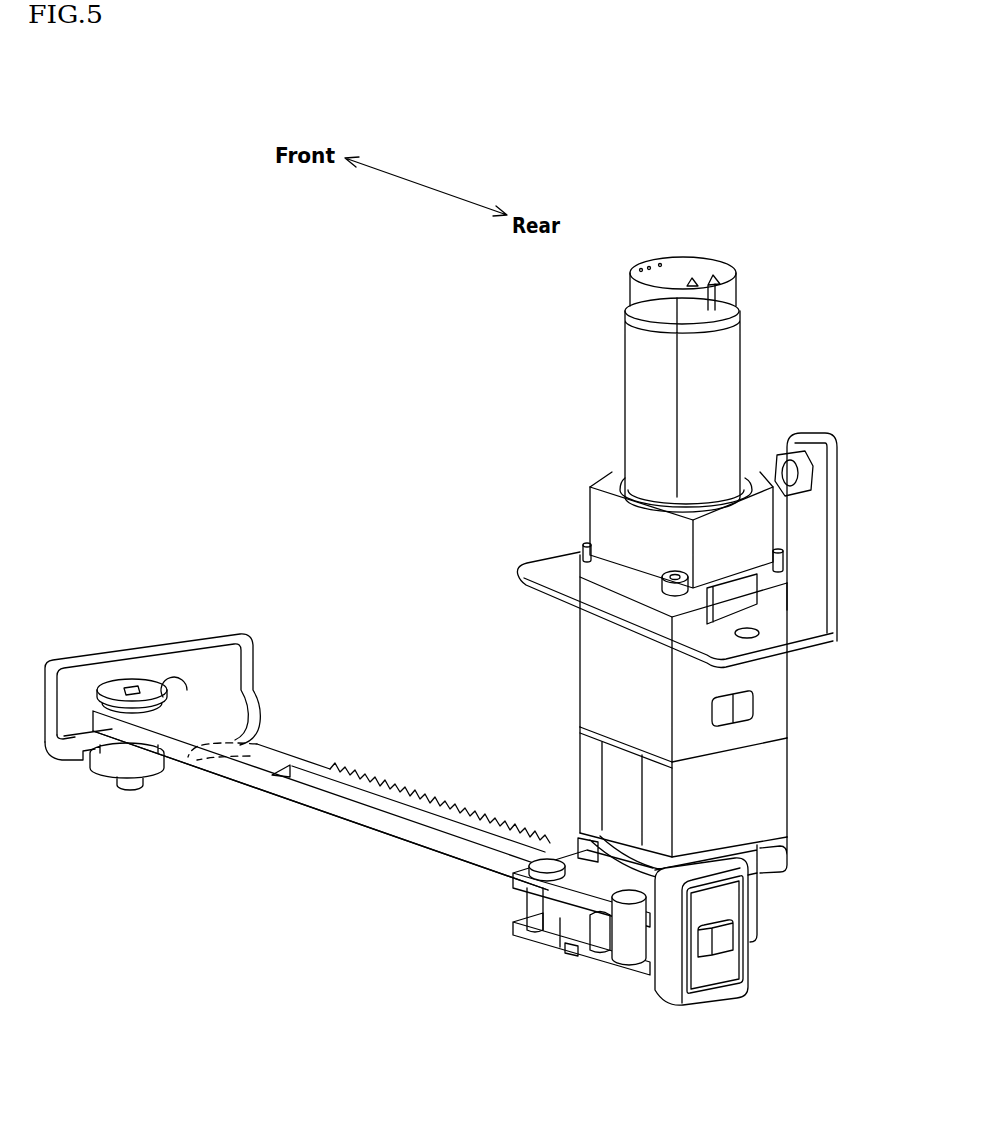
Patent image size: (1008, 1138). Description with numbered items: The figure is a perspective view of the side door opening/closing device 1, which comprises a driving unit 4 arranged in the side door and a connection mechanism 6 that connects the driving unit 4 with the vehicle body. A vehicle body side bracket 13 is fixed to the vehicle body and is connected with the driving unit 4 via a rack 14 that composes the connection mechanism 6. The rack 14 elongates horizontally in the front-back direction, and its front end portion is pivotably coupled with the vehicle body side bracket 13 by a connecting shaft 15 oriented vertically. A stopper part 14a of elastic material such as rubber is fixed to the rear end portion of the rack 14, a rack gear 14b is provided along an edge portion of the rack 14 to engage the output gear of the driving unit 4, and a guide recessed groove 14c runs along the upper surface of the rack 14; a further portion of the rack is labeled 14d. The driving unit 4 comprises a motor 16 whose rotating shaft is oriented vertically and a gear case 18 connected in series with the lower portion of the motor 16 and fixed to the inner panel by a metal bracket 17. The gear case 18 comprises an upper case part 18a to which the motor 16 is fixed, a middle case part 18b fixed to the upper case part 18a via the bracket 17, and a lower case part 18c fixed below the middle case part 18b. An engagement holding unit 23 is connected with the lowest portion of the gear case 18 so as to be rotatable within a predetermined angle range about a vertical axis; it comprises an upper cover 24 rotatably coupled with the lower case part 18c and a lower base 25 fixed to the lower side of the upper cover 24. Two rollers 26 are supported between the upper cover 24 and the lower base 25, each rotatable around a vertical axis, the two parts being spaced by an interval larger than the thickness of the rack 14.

The side door opening/closing device 1 is at (478, 477).
The driving unit 4 is at (753, 343).
The connection mechanism 6 is at (283, 798).
The vehicle body side bracket 13 is at (191, 636).
The rack 14 is at (292, 757).
The stopper part 14a is at (667, 1007).
The rack gear 14b is at (408, 796).
The guide recessed groove 14c is at (352, 780).
The arm portion 14d is at (357, 815).
The connecting shaft 15 is at (133, 683).
The motor 16 is at (740, 383).
The bracket 17 is at (835, 553).
The gear case 18 is at (592, 500).
The upper case part 18a is at (590, 527).
The middle case part 18b is at (788, 697).
The lower case part 18c is at (790, 786).
The engagement holding unit 23 is at (542, 945).
The upper cover 24 is at (562, 917).
The lower base 25 is at (608, 968).
The rollers 26 is at (560, 915).